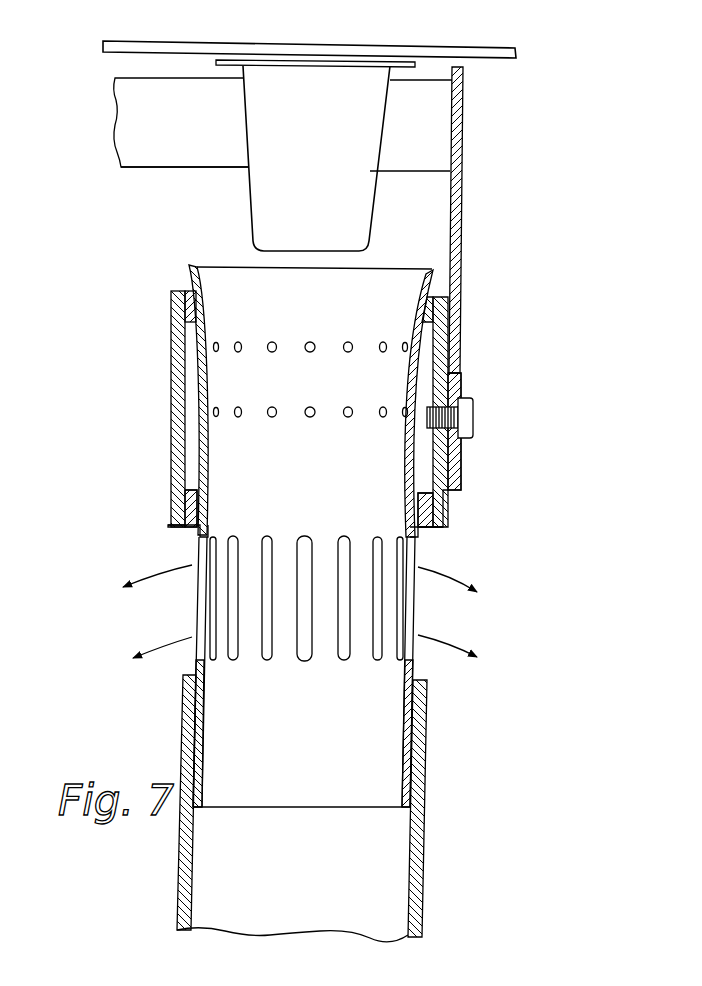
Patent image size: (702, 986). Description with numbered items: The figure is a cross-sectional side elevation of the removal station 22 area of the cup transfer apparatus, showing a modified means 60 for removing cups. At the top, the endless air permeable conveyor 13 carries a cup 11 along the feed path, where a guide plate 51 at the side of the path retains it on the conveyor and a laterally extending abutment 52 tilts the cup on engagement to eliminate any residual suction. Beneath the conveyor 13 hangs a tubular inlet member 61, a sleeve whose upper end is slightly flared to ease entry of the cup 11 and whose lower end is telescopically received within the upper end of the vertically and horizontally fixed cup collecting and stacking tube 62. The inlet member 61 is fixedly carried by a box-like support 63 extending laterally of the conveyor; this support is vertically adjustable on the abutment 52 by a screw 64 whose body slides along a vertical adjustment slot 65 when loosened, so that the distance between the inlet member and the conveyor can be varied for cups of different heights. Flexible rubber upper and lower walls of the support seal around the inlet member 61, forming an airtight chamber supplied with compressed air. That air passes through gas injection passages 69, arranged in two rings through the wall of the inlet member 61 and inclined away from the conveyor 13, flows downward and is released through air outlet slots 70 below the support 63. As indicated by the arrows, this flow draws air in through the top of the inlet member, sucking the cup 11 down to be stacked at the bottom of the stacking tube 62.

The cup 11 is at (378, 208).
The article transfer conveyor 13 is at (450, 47).
The article removal station 22 is at (243, 145).
The guide plate 51 is at (193, 170).
The abutment 52 is at (461, 222).
The means for removing cups 60 is at (107, 382).
The tubular inlet member 61 is at (315, 395).
The cup collecting and stacking tube 62 is at (420, 851).
The box-like support 63 is at (161, 423).
The screw 64 is at (476, 419).
The vertical adjustment slot 65 is at (466, 428).
The gas injection passage 69 is at (236, 352).
The air outlet slot 70 is at (302, 535).